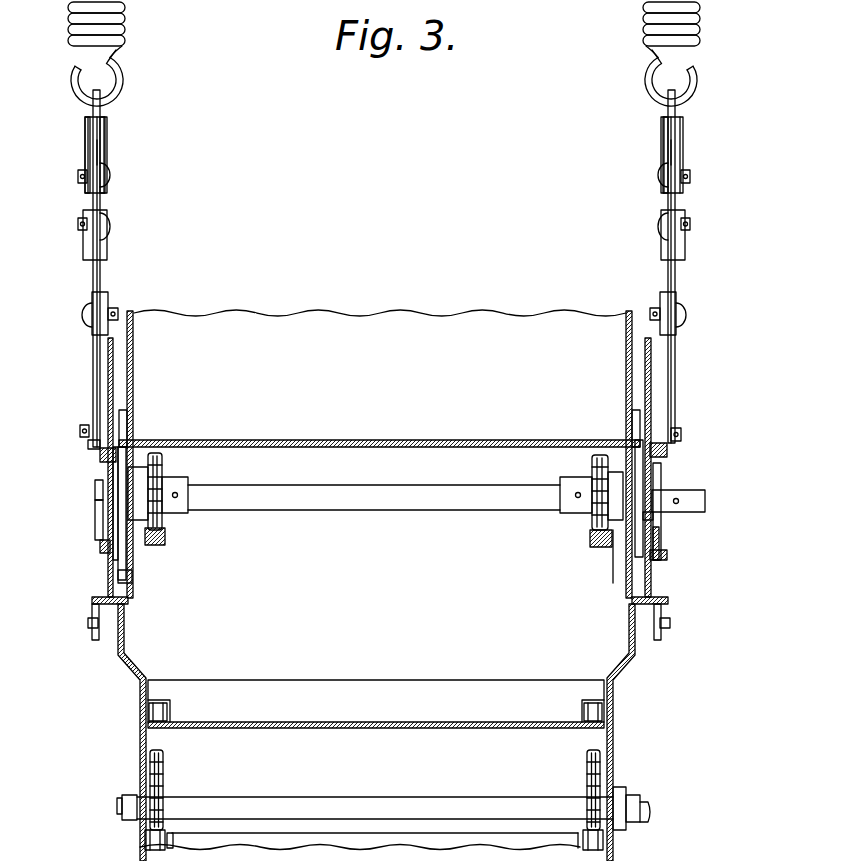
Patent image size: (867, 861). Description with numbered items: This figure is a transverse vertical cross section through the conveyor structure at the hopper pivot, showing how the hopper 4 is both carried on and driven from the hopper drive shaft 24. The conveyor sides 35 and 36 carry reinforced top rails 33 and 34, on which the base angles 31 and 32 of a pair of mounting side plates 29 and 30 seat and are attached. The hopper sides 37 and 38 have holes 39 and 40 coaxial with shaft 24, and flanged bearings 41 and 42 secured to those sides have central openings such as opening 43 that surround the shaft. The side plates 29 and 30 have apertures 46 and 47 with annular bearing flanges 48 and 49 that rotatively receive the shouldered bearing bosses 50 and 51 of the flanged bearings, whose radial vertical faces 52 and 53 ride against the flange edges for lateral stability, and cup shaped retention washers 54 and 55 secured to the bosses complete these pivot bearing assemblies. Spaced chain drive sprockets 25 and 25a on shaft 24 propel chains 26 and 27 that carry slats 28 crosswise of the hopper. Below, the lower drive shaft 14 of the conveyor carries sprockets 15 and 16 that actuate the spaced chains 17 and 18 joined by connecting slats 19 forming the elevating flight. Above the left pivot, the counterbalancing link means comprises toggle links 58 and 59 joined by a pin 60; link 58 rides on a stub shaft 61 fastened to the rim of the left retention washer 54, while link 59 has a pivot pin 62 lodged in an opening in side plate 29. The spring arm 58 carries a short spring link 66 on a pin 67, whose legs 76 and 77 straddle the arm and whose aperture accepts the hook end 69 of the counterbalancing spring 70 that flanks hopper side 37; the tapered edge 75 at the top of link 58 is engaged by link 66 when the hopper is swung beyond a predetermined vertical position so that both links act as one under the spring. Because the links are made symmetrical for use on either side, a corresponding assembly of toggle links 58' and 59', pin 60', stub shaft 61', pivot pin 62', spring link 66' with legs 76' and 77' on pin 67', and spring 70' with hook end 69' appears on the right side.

The hopper 4 is at (478, 252).
The lower drive shaft 14 is at (300, 800).
The sprocket 15 is at (148, 765).
The sprocket 16 is at (600, 770).
The chain 17 is at (146, 712).
The chain 18 is at (604, 712).
The connecting slats 19 is at (388, 680).
The hopper drive shaft 24 is at (405, 510).
The chain drive sprocket 25 is at (176, 482).
The chain drive sprocket 25a is at (590, 480).
The chain 26 is at (165, 540).
The chain 27 is at (590, 545).
The slats 28 is at (360, 847).
The side plate 29 is at (108, 372).
The side plate 30 is at (651, 380).
The base angle 31 is at (118, 598).
The base angle 32 is at (668, 603).
The reinforced top rail 33 is at (96, 622).
The reinforced top rail 34 is at (662, 628).
The conveyor side 35 is at (118, 655).
The conveyor side 36 is at (636, 658).
The hopper side 37 is at (134, 325).
The hopper side 38 is at (624, 330).
The hole 39 is at (132, 548).
The hole 40 is at (612, 550).
The flanged bearing 41 is at (127, 440).
The flanged bearing 42 is at (632, 440).
The central opening 43 is at (113, 478).
The aperture 46 is at (100, 543).
The aperture 47 is at (659, 546).
The annular bearing flange 48 is at (104, 455).
The annular bearing flange 49 is at (668, 458).
The shouldered bearing boss 50 is at (103, 520).
The shouldered bearing boss 51 is at (662, 480).
The vertical face 52 is at (110, 498).
The vertical face 53 is at (660, 517).
The cup shaped retention washer 54 is at (88, 444).
The cup shaped retention washer 55 is at (660, 450).
The toggle link 58 is at (63, 282).
The hanger bar 58' is at (713, 280).
The toggle link 59 is at (127, 268).
The hanger rod 59' is at (705, 266).
The pin 60 is at (70, 235).
The bracket 60' is at (650, 235).
The stub shaft 61 is at (68, 412).
The nut 61' is at (707, 418).
The pivot pin 62 is at (75, 311).
The bolt 62' is at (703, 312).
The spring link 66 is at (141, 142).
The bracket 66' is at (634, 155).
The pin 67 is at (125, 182).
The bolt 67' is at (700, 167).
The hook end 69 is at (131, 76).
The hook 69' is at (639, 76).
The counterbalancing spring 70 is at (131, 24).
The spring 70' is at (642, 28).
The tapered edge 75 is at (88, 163).
The leg 76 is at (64, 153).
The rod 76' is at (641, 162).
The leg 77 is at (133, 155).
The bracket plate 77' is at (698, 155).